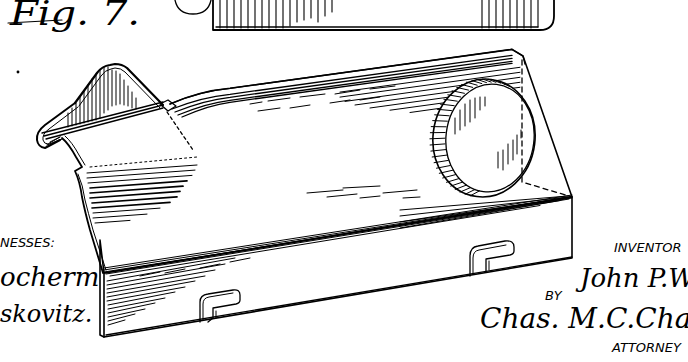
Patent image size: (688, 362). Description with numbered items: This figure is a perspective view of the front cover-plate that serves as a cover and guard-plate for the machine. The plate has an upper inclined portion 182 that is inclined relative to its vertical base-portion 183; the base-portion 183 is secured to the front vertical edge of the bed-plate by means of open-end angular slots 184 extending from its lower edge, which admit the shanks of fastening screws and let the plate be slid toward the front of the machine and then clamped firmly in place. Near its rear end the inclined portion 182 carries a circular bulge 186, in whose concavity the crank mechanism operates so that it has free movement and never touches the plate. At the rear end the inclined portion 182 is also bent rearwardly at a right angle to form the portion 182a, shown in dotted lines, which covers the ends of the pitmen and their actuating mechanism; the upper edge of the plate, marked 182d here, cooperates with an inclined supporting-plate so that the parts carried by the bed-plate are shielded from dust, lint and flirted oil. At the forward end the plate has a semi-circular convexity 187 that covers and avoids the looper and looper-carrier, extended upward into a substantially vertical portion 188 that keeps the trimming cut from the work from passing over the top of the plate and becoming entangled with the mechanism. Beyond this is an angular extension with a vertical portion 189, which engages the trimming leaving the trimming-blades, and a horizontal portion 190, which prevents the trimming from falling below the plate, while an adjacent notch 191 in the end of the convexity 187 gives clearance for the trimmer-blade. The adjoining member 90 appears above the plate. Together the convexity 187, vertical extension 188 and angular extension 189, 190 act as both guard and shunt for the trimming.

The carriage member 90 is at (192, 4).
The inclined portion of the cover-plate 182 is at (329, 161).
The rearwardly bent portion 182a is at (548, 187).
The plate upper edge 182d is at (287, 88).
The vertical base-portion 183 is at (336, 266).
The open-end angular slots 184 is at (233, 291).
The circular bulge 186 is at (452, 143).
The semi-circular convexity 187 is at (190, 139).
The vertical extension 188 is at (139, 93).
The vertical portion of the angular extension 189 is at (58, 126).
The horizontal portion of the angular extension 190 is at (53, 141).
The notch 191 is at (70, 156).